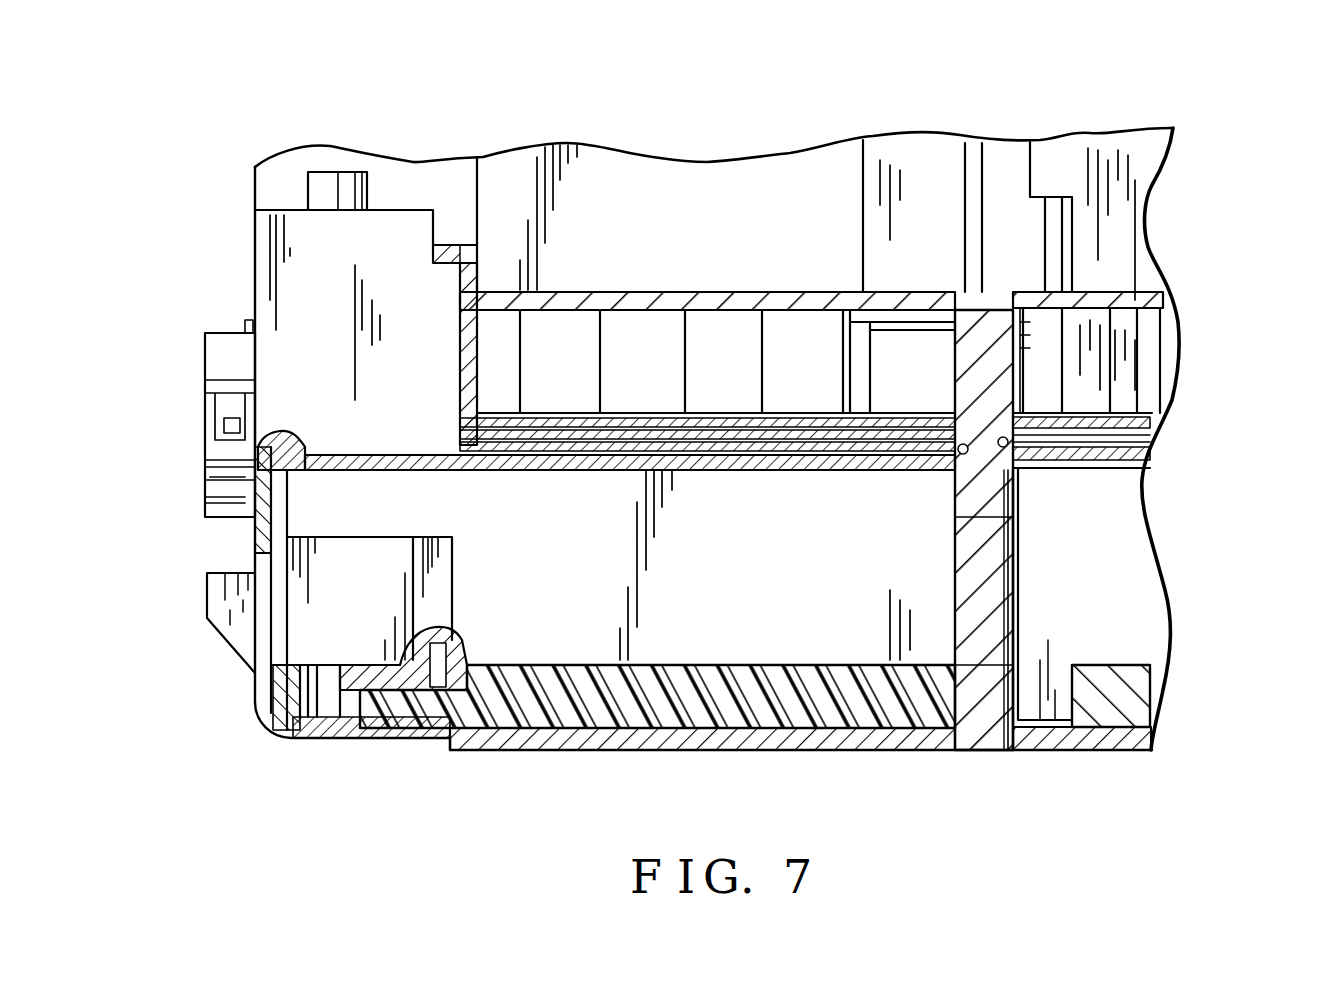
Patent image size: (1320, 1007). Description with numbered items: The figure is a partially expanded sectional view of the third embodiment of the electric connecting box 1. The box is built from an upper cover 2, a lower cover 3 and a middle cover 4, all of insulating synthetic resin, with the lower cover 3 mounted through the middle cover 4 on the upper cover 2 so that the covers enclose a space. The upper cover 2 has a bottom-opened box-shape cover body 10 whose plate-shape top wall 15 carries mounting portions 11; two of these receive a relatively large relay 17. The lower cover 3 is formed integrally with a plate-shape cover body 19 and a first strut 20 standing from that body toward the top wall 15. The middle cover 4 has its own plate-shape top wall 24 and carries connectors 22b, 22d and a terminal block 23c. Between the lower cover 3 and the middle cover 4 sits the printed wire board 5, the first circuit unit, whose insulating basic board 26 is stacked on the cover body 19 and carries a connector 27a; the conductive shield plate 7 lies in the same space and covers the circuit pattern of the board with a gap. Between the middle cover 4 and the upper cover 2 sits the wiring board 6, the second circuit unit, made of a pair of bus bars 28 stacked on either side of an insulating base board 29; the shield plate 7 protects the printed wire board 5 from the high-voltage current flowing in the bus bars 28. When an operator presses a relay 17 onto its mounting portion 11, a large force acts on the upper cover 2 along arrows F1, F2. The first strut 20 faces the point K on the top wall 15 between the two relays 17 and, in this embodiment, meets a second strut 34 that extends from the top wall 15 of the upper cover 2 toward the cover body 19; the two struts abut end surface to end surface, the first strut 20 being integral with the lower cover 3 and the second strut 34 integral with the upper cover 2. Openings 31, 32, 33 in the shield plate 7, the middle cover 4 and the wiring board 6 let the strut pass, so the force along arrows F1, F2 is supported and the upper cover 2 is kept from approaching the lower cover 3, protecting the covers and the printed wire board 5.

The electric connecting box 1 is at (1152, 107).
The upper cover 2 is at (653, 292).
The lower cover 3 is at (1031, 753).
The middle cover 4 is at (1100, 472).
The printed wire board 5 is at (745, 667).
The wiring board 6 is at (1141, 454).
The shield plate 7 is at (595, 470).
The cover body 10 is at (737, 290).
The mounting portion 11 is at (912, 290).
The top wall 15 is at (805, 290).
The relay 17 is at (930, 168).
The cover body 19 is at (1090, 752).
The first strut 20 is at (978, 675).
The connector 22b is at (207, 424).
The connector 22d is at (232, 516).
The terminal block 23c is at (322, 190).
The top wall 24 is at (950, 457).
The basic board 26 is at (685, 705).
The connector 27a is at (342, 623).
The bus bar 28 is at (1113, 416).
The insulating base board 29 is at (1140, 430).
The opening 31 is at (1018, 510).
The opening 32 is at (962, 455).
The opening 33 is at (1052, 470).
The second strut 34 is at (1010, 597).
The point K is at (955, 306).
The arrow F1 is at (705, 357).
The arrow F2 is at (1158, 390).